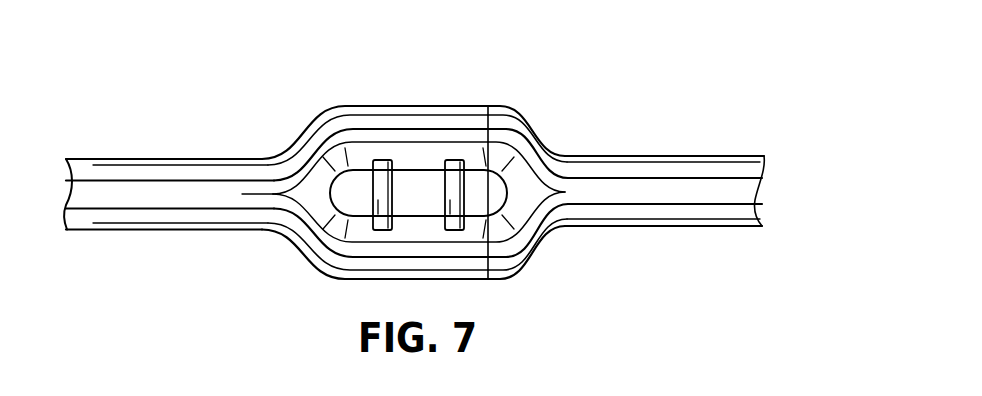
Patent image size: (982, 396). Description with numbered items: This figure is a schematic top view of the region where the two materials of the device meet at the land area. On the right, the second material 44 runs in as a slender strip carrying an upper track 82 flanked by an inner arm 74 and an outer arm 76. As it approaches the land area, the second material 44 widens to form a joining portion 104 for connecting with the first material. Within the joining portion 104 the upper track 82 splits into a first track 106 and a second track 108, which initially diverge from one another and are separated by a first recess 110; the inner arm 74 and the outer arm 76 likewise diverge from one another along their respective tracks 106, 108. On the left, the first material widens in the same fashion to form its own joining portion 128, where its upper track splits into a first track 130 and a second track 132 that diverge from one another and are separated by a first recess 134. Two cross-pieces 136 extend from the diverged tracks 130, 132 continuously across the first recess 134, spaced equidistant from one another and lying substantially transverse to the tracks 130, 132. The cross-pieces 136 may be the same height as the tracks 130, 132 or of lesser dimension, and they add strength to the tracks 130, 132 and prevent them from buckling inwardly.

The second material 44 is at (745, 195).
The inner arm 74 is at (717, 162).
The outer arm 76 is at (722, 228).
The upper track 82 is at (727, 190).
The joining portion 104 is at (513, 105).
The first track 106 is at (525, 150).
The second track 108 is at (523, 232).
The first recess 110 is at (503, 190).
The joining portion 128 is at (331, 103).
The first track 130 is at (328, 143).
The second track 132 is at (317, 233).
The first recess 134 is at (330, 192).
The cross-pieces 136 is at (453, 160).